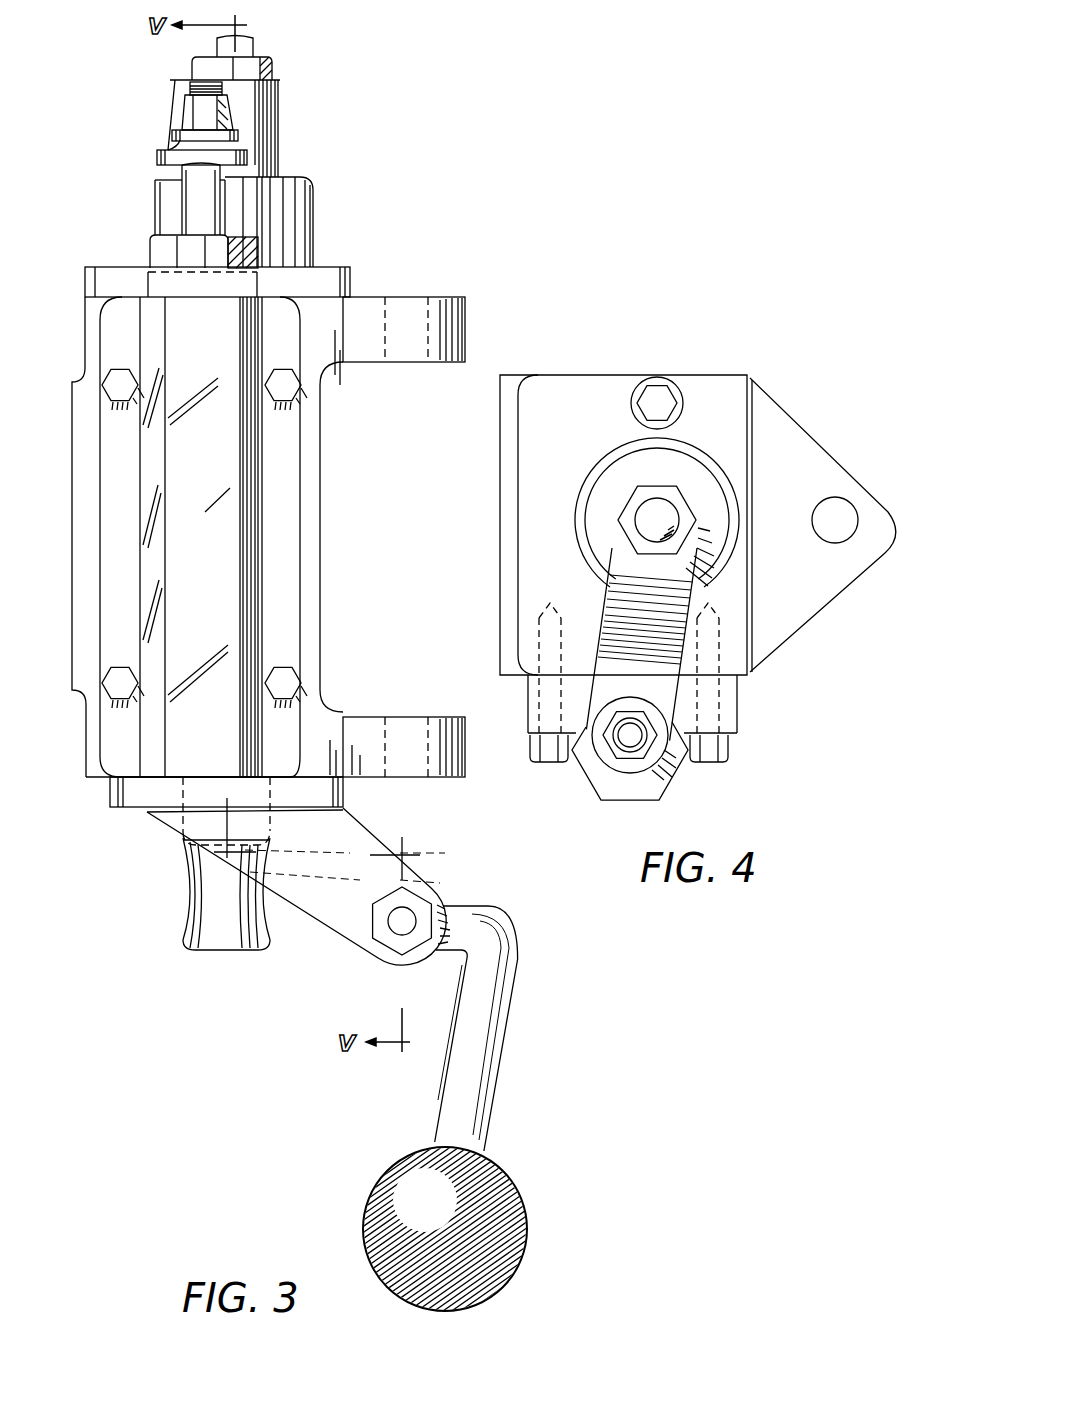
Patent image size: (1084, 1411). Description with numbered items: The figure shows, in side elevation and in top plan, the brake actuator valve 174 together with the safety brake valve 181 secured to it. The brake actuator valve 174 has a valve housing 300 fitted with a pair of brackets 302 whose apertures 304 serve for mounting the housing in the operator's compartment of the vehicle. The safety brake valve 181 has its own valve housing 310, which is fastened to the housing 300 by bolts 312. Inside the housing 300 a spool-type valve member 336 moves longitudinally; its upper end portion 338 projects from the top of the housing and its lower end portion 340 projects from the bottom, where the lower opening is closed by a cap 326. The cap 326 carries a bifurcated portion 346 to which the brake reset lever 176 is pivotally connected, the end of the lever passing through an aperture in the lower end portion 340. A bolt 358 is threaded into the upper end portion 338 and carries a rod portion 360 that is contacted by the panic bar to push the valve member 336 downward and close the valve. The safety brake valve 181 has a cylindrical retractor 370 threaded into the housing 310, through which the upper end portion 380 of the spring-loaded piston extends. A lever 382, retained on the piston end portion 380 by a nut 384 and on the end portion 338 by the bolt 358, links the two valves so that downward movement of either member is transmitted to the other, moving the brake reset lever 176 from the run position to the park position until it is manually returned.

In FIG. 3, the brake actuator valve 174 is at (84, 268).
In FIG. 4, the brake actuator valve 174 is at (630, 372).
In FIG. 3, the brake reset lever 176 is at (508, 990).
In FIG. 3, the safety brake valve 181 is at (97, 546).
In FIG. 4, the safety brake valve 181 is at (745, 718).
In FIG. 3, the valve housing 300 is at (88, 348).
In FIG. 4, the valve housing 300 is at (730, 378).
In FIG. 3, the brackets 302 is at (460, 297).
In FIG. 4, the brackets 302 is at (840, 452).
In FIG. 3, the apertures 304 is at (428, 328).
In FIG. 4, the apertures 304 is at (822, 502).
In FIG. 3, the valve housing 310 is at (150, 480).
In FIG. 4, the valve housing 310 is at (738, 690).
In FIG. 3, the bolts 312 is at (112, 385).
In FIG. 4, the bolts 312 is at (555, 765).
In FIG. 3, the cap 326 is at (108, 790).
In FIG. 3, the spool-type valve member 336 is at (188, 780).
In FIG. 3, the upper end portion 338 is at (280, 108).
In FIG. 3, the lower end portion 340 is at (192, 878).
In FIG. 3, the bifurcated portion 346 is at (425, 880).
In FIG. 3, the bolt 358 is at (265, 72).
In FIG. 4, the bolt 358 is at (660, 490).
In FIG. 3, the rod portion 360 is at (255, 46).
In FIG. 4, the rod portion 360 is at (650, 510).
In FIG. 3, the cylindrical retractor 370 is at (165, 255).
In FIG. 4, the cylindrical retractor 370 is at (608, 778).
In FIG. 3, the upper end portion 380 is at (192, 195).
In FIG. 4, the upper end portion 380 is at (622, 728).
In FIG. 3, the lever 382 is at (252, 126).
In FIG. 4, the lever 382 is at (641, 644).
In FIG. 3, the nut 384 is at (182, 120).
In FIG. 4, the nut 384 is at (665, 770).